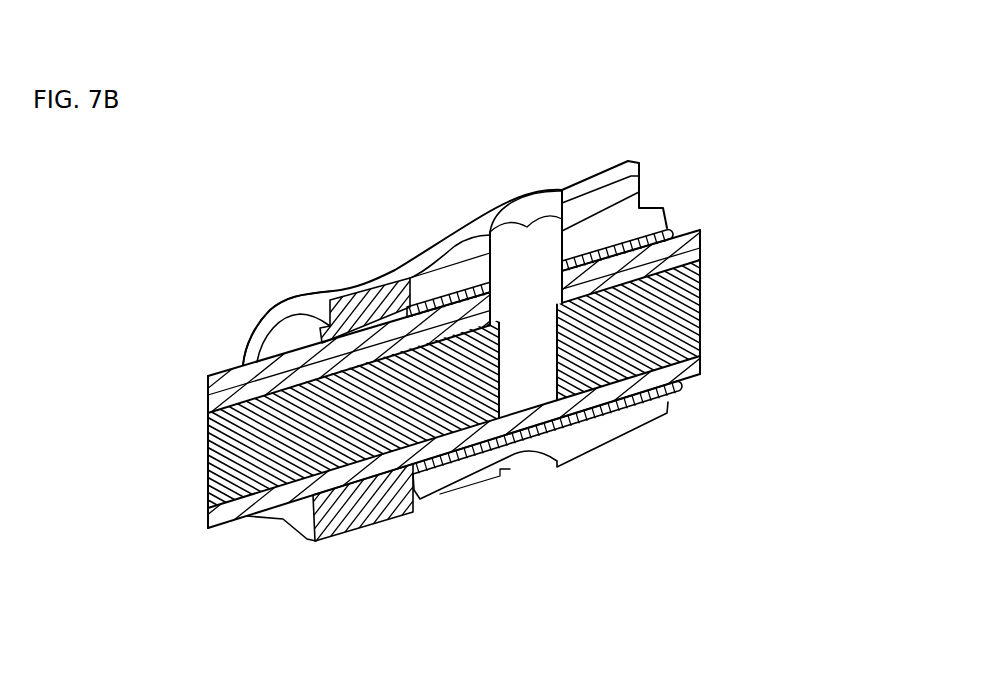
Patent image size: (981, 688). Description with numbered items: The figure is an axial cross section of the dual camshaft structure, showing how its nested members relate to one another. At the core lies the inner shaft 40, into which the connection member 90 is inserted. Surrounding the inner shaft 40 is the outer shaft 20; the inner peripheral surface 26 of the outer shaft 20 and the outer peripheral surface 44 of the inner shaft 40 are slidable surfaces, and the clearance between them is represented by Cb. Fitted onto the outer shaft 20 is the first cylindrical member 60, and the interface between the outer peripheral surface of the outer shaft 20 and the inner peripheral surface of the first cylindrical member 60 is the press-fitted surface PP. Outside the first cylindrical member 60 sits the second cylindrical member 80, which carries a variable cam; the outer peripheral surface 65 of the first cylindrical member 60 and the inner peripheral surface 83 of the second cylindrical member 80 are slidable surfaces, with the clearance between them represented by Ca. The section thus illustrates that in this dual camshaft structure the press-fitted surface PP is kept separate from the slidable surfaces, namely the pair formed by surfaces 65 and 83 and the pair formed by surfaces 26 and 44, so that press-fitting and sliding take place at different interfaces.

The outer shaft 20 is at (243, 522).
The inner shaft 40 is at (805, 278).
The first cylindrical member 60 is at (253, 318).
The second cylindrical member 80 is at (638, 207).
The connection member 90 is at (515, 267).
The inner peripheral surface of the outer shaft 26 is at (780, 230).
The outer peripheral surface of the inner shaft 44 is at (780, 333).
The outer peripheral surface of the first cylindrical member 65 is at (671, 211).
The inner peripheral surface of the second cylindrical member 83 is at (691, 418).
The press-fitted surface PP is at (682, 226).